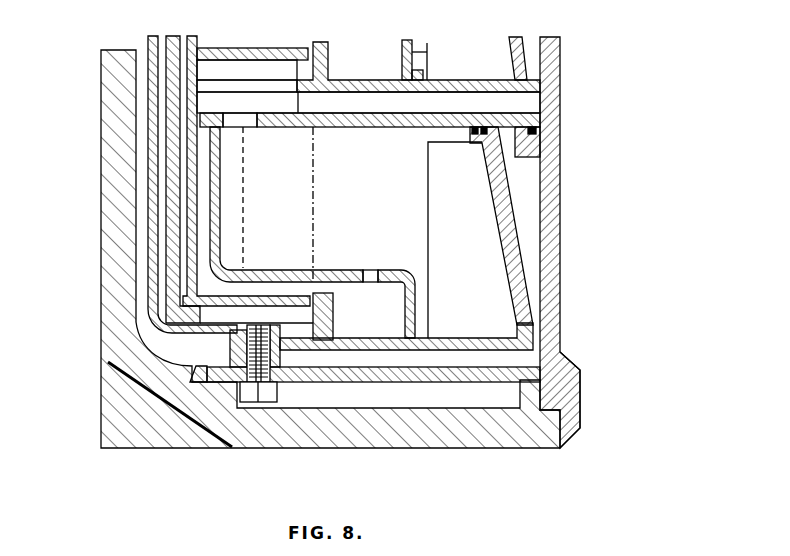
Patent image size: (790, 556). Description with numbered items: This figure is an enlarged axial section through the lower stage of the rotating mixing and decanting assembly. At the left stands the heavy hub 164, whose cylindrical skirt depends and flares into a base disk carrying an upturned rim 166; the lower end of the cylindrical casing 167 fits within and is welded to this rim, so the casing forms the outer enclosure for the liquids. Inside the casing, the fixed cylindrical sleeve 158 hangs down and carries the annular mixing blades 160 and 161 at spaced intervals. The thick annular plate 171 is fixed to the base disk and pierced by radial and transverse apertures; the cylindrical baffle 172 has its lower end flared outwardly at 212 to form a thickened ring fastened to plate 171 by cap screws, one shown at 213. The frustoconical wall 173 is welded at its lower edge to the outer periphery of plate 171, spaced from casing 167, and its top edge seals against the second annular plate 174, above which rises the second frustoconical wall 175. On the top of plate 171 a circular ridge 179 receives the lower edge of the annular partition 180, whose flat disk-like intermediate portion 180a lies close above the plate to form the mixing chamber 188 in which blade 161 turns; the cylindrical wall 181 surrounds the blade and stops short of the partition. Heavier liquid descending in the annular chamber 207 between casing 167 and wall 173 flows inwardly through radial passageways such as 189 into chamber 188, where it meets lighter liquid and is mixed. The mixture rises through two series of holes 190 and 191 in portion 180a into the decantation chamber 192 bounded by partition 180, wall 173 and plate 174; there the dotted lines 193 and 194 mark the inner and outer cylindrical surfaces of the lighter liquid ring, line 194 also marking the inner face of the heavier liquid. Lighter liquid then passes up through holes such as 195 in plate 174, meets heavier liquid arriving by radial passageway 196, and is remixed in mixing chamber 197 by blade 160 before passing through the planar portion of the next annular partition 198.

The cylindrical sleeve 158 is at (168, 36).
The annular mixing blade 160 is at (263, 48).
The mixing blade 161 is at (253, 300).
The hub 164 is at (104, 186).
The upturned rim 166 is at (567, 362).
The cylindrical casing 167 is at (553, 183).
The annular plate 171 is at (370, 385).
The cylindrical baffle 172 is at (148, 40).
The frustoconical wall 173 is at (487, 190).
The second annular plate 174 is at (442, 79).
The second frustoconical wall 175 is at (514, 37).
The circular ridge 179 is at (430, 330).
The annular partition 180 is at (221, 210).
The intermediate portion 180a is at (297, 270).
The cylindrical wall 181 is at (340, 314).
The mixing chamber 188 is at (348, 330).
The radial passageway 189 is at (457, 357).
The holes 190 is at (330, 270).
The holes 191 is at (386, 271).
The decantation chamber 192 is at (370, 168).
The dotted line 193 is at (246, 180).
The dotted line 194 is at (318, 213).
The hole 195 is at (256, 117).
The radial passageway 196 is at (523, 106).
The mixing chamber 197 is at (268, 70).
The annular partition 198 is at (404, 42).
The annular chamber 207 is at (530, 237).
The thickened ring 212 is at (172, 334).
The cap screw 213 is at (280, 394).